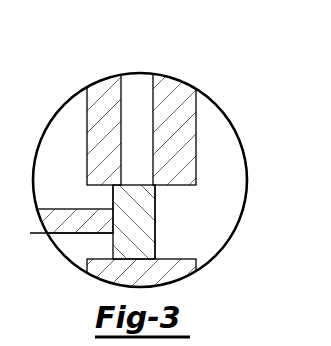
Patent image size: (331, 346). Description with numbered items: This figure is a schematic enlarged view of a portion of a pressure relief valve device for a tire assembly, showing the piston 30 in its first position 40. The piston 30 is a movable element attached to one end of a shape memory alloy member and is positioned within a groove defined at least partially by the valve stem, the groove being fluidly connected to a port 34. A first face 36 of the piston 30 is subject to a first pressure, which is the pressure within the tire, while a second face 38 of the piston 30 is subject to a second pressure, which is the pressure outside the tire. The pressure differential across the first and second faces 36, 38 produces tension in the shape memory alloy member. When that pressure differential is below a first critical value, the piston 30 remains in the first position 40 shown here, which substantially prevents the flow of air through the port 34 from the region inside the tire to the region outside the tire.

The piston 30 is at (144, 230).
The port 34 is at (145, 86).
The first face 36 is at (108, 197).
The second face 38 is at (160, 233).
The first position 40 is at (156, 207).